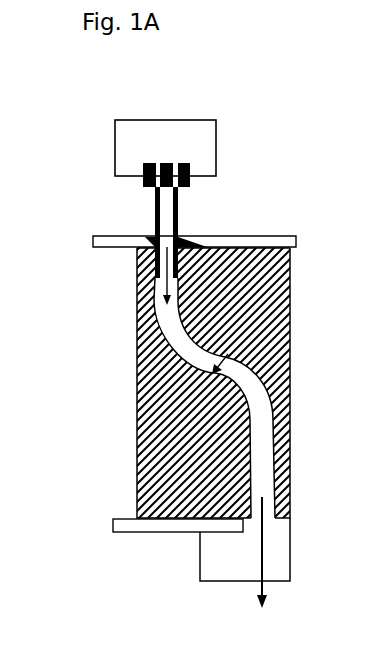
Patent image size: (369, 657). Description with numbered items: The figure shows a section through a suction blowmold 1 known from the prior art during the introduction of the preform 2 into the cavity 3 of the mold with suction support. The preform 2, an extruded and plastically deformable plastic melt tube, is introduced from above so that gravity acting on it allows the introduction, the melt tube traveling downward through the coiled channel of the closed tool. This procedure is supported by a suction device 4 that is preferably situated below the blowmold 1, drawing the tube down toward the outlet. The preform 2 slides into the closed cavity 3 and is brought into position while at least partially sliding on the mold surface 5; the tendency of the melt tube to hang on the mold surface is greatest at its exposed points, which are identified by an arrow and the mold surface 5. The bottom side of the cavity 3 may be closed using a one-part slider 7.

The suction blowmold 1 is at (83, 339).
The preform 2 is at (178, 223).
The cavity 3 is at (260, 453).
The suction device 4 is at (210, 575).
The mold surface 5 is at (239, 383).
The one-part slider 7 is at (185, 529).